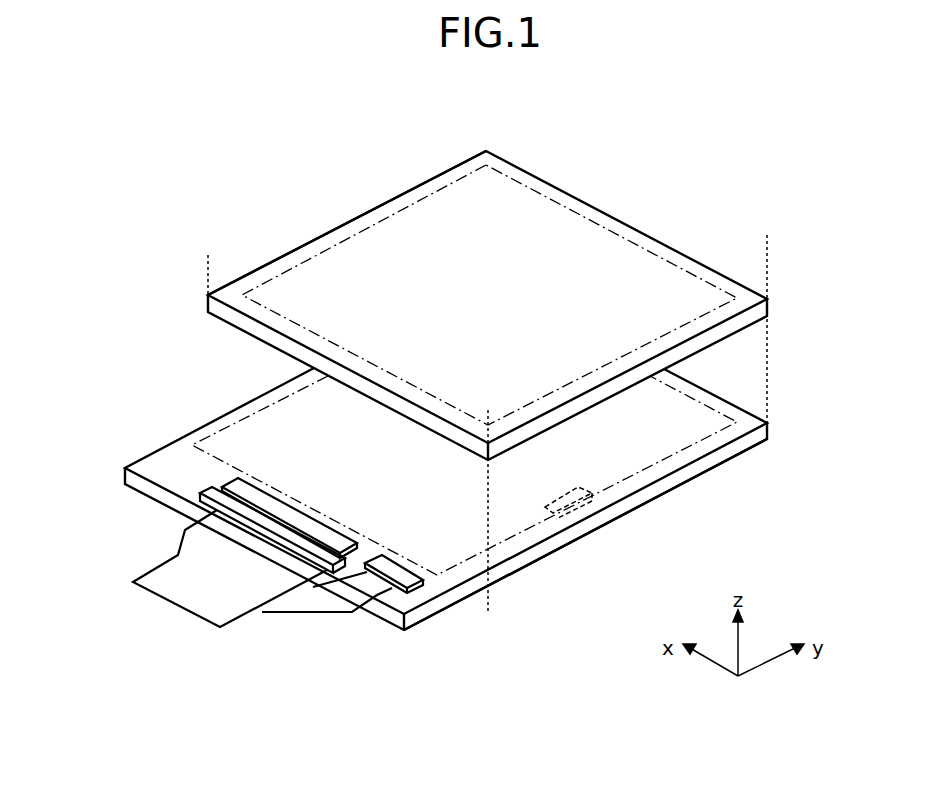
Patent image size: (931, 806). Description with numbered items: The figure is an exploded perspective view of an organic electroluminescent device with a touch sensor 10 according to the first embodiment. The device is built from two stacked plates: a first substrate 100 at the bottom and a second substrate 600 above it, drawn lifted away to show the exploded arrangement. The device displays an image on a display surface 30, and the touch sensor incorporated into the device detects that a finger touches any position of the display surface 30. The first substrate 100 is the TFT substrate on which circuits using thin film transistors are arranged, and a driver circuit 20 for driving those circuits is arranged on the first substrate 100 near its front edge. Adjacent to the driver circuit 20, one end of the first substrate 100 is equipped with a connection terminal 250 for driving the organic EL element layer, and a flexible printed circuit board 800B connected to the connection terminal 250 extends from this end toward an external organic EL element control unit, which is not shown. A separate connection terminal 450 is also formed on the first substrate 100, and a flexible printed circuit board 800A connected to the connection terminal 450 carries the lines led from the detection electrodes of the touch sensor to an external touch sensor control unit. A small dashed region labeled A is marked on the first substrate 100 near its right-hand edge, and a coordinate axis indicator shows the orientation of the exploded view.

The organic electroluminescent device with a touch sensor 10 is at (596, 187).
The second substrate 600 is at (672, 337).
The first substrate 100 is at (733, 440).
The display surface 30 is at (408, 190).
The region A is at (600, 510).
The driver circuit 20 is at (226, 484).
The connection terminal 250 is at (200, 492).
The flexible printed circuit board 800A is at (290, 603).
The flexible printed circuit board 800B is at (217, 608).
The connection terminal 450 is at (415, 590).